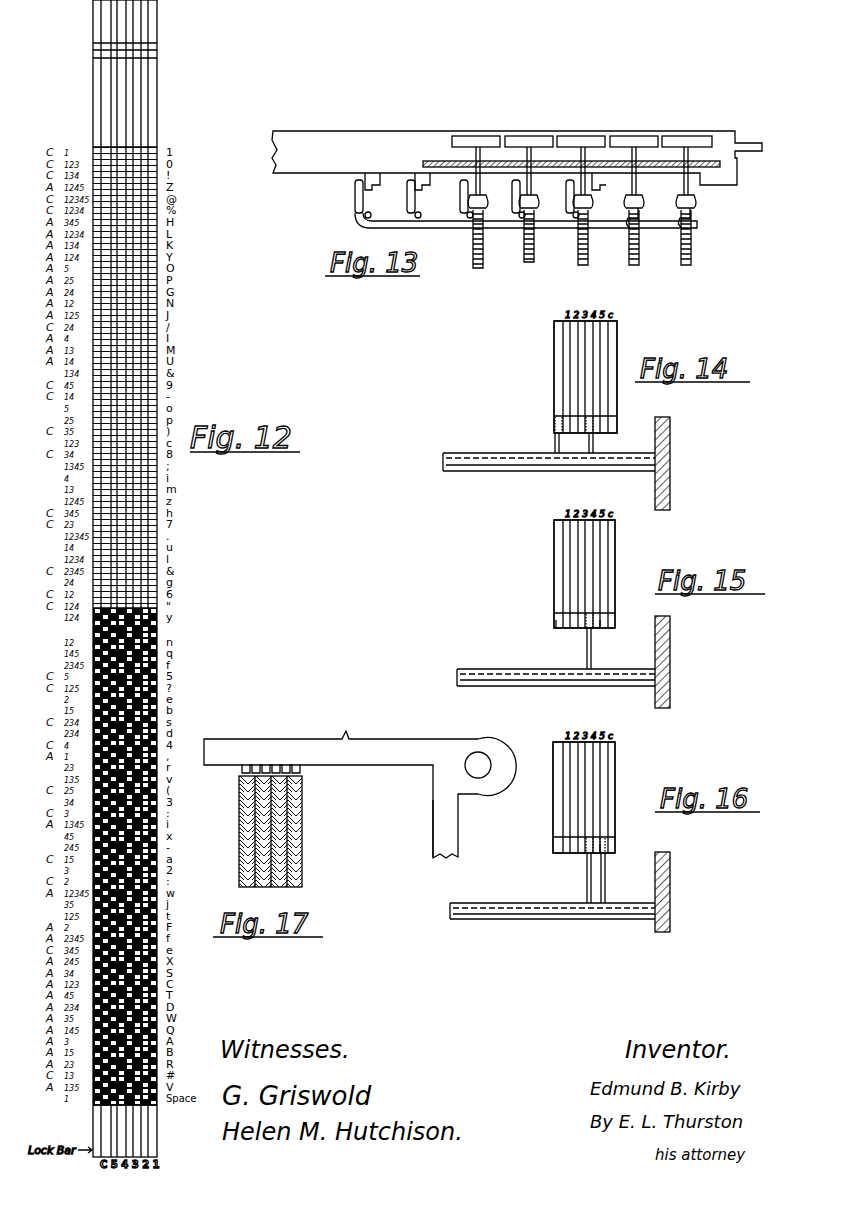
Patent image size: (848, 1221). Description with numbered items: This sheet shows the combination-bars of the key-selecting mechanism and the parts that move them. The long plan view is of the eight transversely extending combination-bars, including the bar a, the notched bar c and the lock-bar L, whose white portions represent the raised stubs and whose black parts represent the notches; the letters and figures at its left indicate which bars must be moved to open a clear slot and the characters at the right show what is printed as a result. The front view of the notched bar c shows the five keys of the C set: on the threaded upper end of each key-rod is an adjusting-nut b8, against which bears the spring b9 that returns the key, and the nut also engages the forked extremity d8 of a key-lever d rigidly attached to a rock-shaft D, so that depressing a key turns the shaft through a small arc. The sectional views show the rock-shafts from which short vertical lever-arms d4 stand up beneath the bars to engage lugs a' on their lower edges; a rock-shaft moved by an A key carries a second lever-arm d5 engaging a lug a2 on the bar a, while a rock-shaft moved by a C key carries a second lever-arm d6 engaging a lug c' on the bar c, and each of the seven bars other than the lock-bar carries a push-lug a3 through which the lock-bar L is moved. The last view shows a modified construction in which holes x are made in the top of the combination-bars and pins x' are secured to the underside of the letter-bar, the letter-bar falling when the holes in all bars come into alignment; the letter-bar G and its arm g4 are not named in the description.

In FIG. 12, the combination-bar a is at (135, 1126).
In FIG. 14, the combination-bar a is at (575, 377).
In FIG. 15, the combination-bar a is at (574, 574).
In FIG. 16, the combination-bar a is at (574, 797).
In FIG. 13, the combination-bar c is at (517, 158).
In FIG. 13, the lug c' is at (408, 184).
In FIG. 15, the lug c' is at (618, 629).
In FIG. 16, the lug c' is at (618, 854).
In FIG. 13, the key-lever d is at (430, 213).
In FIG. 13, the lever-arm d6 is at (352, 197).
In FIG. 16, the lever-arm d6 is at (606, 888).
In FIG. 13, the forked extremity d8 is at (648, 213).
In FIG. 14, the lever-arm d5 is at (553, 443).
In FIG. 14, the lever-arm d4 is at (586, 445).
In FIG. 15, the lever-arm d4 is at (594, 652).
In FIG. 16, the lever-arm d4 is at (586, 890).
In FIG. 13, the rock-shaft D is at (368, 218).
In FIG. 14, the rock-shaft D is at (482, 452).
In FIG. 15, the rock-shaft D is at (500, 668).
In FIG. 16, the rock-shaft D is at (480, 903).
In FIG. 13, the adjusting-nut b8 is at (535, 205).
In FIG. 13, the spring b9 is at (490, 255).
In FIG. 13, the push-lug a3 is at (600, 195).
In FIG. 14, the lug a2 is at (553, 420).
In FIG. 15, the lug a2 is at (553, 620).
In FIG. 16, the lug a2 is at (552, 846).
In FIG. 15, the lug a' is at (556, 637).
In FIG. 14, the lock-bar L is at (617, 330).
In FIG. 15, the lock-bar L is at (615, 540).
In FIG. 16, the lock-bar L is at (615, 778).
In FIG. 17, the lever G is at (380, 748).
In FIG. 17, the lever arm g4 is at (432, 826).
In FIG. 17, the holes x is at (283, 831).
In FIG. 17, the pins x' is at (286, 775).